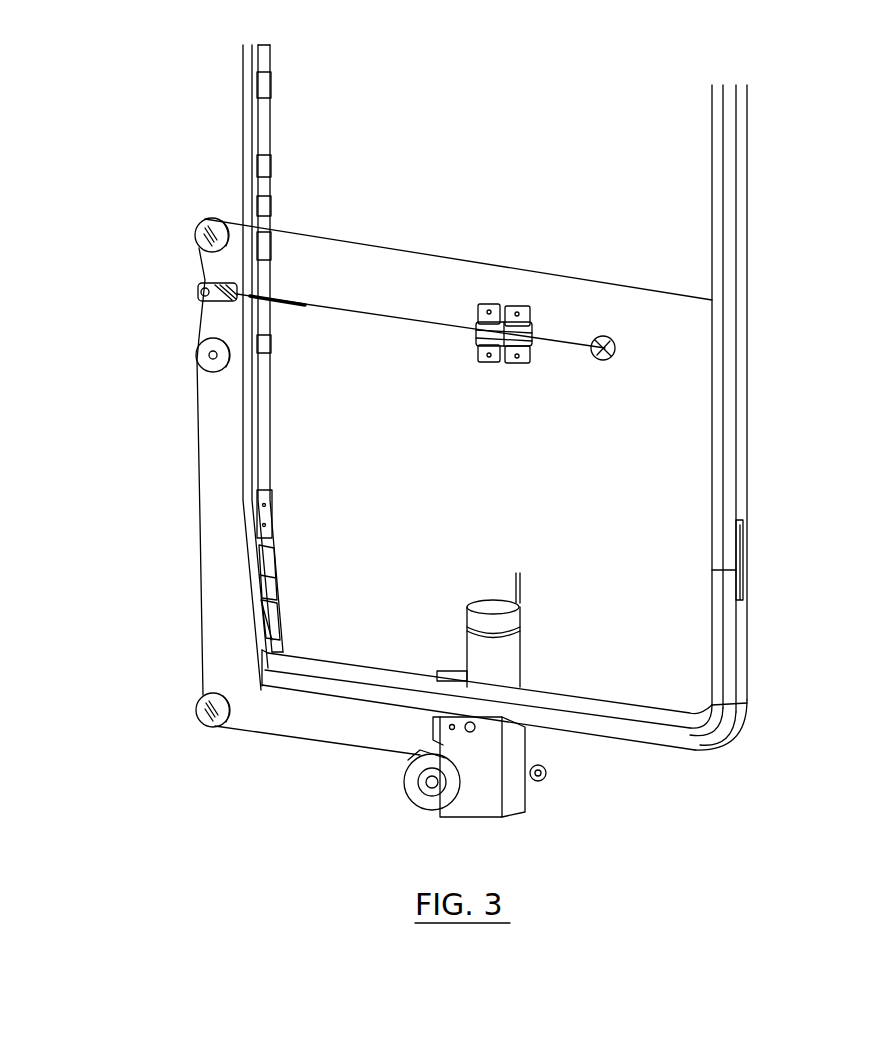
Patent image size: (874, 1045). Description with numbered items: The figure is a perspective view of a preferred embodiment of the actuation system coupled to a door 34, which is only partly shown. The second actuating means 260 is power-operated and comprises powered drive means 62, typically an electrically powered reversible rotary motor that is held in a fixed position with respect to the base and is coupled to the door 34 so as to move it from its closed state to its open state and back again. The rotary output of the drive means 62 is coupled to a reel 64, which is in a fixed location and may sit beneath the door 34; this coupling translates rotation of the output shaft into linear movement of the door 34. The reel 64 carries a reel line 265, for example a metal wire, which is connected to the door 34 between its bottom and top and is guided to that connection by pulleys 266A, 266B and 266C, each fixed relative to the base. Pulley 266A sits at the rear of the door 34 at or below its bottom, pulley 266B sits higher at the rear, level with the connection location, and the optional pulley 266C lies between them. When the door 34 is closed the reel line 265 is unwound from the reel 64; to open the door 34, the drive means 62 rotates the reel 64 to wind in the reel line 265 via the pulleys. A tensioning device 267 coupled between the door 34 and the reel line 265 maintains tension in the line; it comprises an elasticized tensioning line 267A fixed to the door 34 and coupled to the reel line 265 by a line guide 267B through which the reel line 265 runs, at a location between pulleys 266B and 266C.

The door 34 is at (752, 164).
The second actuating means 260 is at (178, 661).
The reel line 265 is at (197, 500).
The pulley 266A is at (197, 718).
The pulley 266B is at (195, 238).
The pulley 266C is at (197, 352).
The tensioning device 267 is at (380, 325).
The tensioning line 267A is at (437, 332).
The line guide 267B is at (197, 292).
The drive means 62 is at (510, 665).
The reel 64 is at (410, 790).